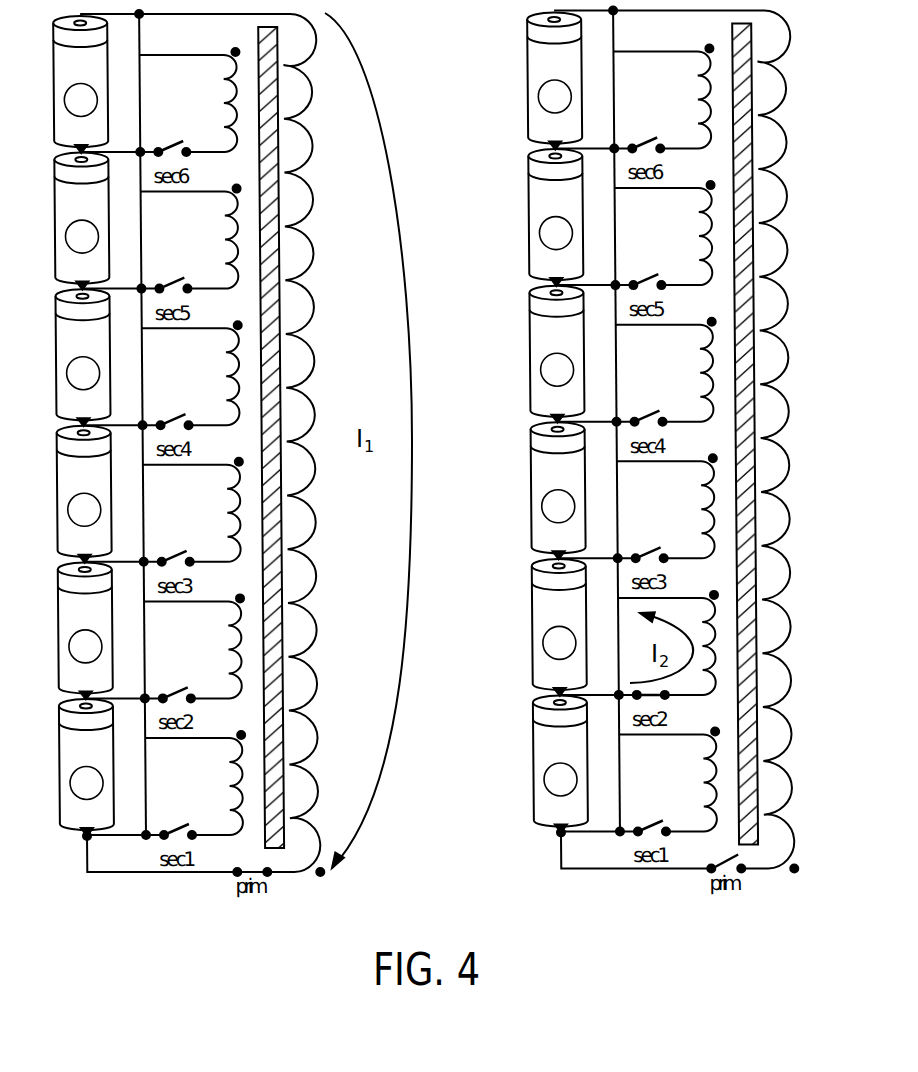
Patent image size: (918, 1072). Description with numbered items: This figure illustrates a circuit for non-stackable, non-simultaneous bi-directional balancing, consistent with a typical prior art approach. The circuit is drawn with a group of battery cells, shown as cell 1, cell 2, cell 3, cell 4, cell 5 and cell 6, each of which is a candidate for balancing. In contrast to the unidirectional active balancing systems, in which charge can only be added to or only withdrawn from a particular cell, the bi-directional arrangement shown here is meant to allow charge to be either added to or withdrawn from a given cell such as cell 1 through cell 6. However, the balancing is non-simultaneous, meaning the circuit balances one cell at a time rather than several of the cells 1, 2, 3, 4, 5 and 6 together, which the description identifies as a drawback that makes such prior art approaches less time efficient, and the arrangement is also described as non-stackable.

The battery cell 1 is at (323, 763).
The battery cell 2 is at (322, 626).
The battery cell 3 is at (321, 489).
The battery cell 4 is at (319, 353).
The battery cell 5 is at (318, 216).
The battery cell 6 is at (317, 80).